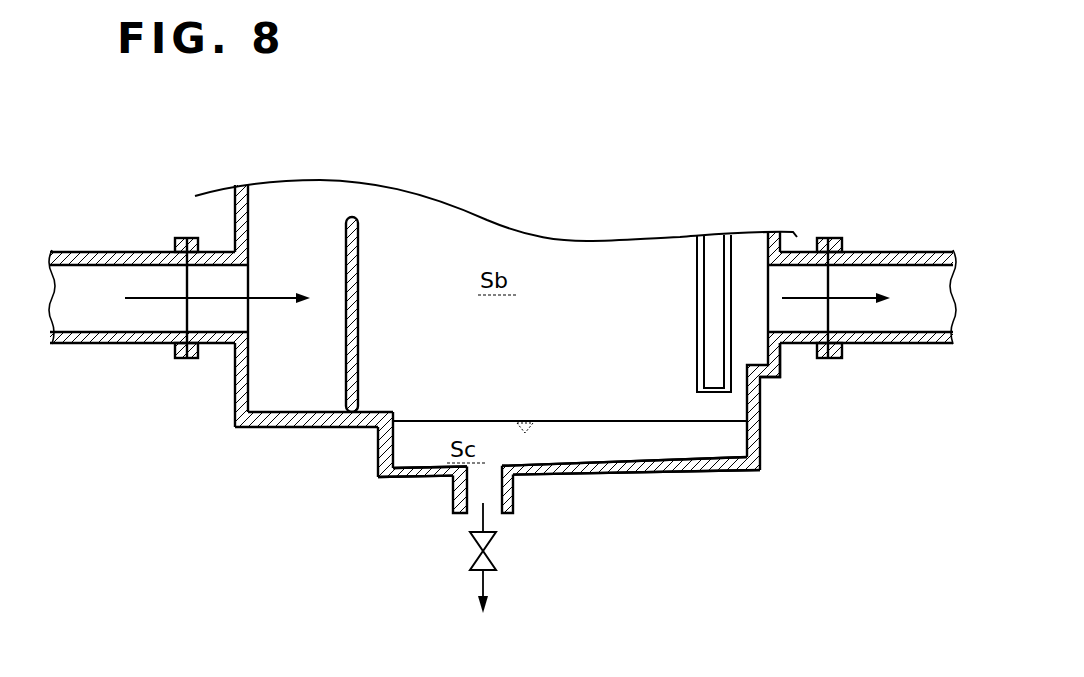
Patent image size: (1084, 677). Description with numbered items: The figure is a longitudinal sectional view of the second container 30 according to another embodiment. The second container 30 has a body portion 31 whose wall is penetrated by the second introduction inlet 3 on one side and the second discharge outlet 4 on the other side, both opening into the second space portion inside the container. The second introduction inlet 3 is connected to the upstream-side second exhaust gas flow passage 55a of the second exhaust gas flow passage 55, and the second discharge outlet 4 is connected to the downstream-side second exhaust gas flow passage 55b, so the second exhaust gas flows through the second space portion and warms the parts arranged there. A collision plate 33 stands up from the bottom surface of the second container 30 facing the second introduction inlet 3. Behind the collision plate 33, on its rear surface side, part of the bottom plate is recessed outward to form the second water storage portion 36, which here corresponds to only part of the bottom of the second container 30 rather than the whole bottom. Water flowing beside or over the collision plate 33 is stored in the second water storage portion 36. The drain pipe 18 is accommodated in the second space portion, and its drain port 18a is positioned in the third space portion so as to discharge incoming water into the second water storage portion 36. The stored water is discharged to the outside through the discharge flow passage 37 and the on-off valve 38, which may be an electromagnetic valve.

The second introduction inlet 3 is at (209, 346).
The second discharge outlet 4 is at (796, 346).
The drain pipe 18 is at (696, 302).
The drain port 18a is at (713, 393).
The second container 30 is at (502, 346).
The body portion 31 is at (236, 205).
The collision plate 33 is at (360, 310).
The second water storage portion 36 is at (553, 462).
The discharge flow passage 37 is at (514, 505).
The on-off valve 38 is at (497, 557).
The second exhaust gas flow passage 55 is at (519, 339).
The upstream-side second exhaust gas flow passage 55a is at (117, 345).
The downstream-side second exhaust gas flow passage 55b is at (897, 345).